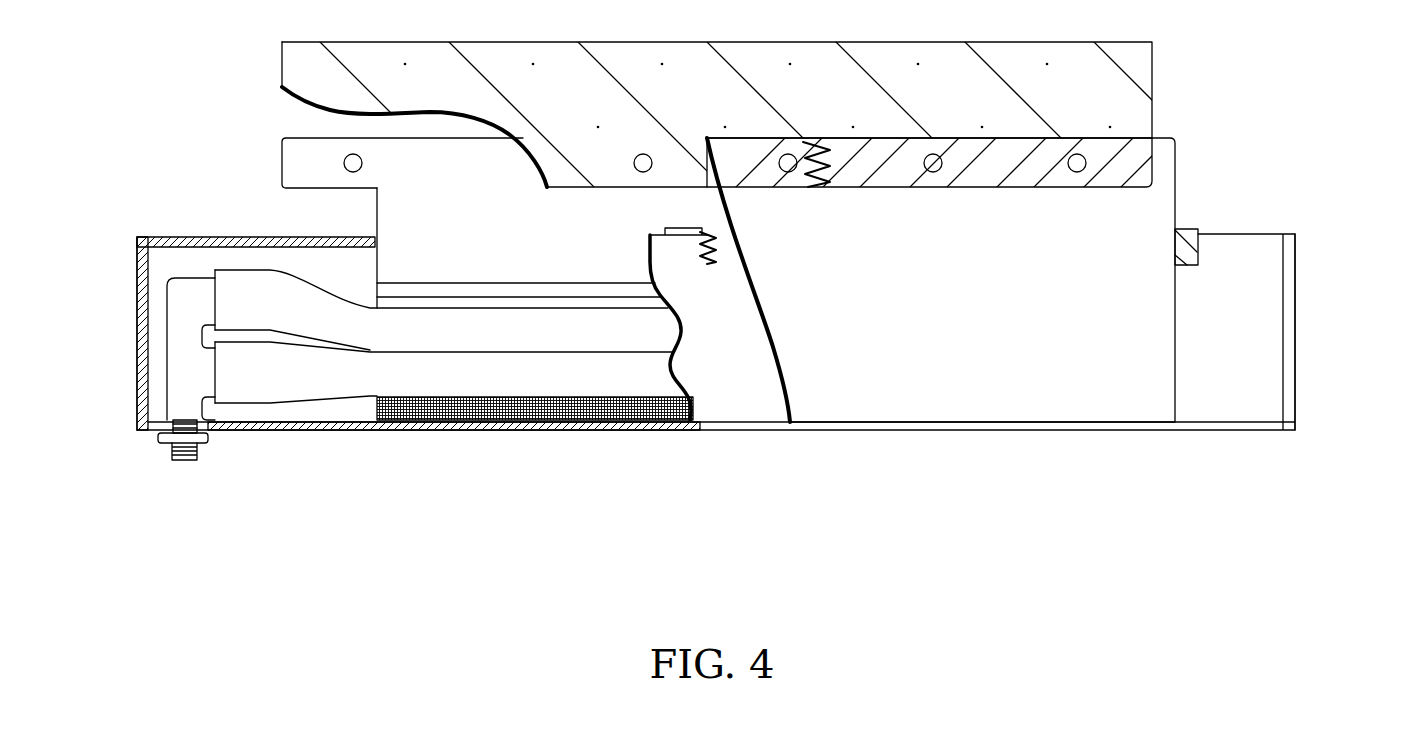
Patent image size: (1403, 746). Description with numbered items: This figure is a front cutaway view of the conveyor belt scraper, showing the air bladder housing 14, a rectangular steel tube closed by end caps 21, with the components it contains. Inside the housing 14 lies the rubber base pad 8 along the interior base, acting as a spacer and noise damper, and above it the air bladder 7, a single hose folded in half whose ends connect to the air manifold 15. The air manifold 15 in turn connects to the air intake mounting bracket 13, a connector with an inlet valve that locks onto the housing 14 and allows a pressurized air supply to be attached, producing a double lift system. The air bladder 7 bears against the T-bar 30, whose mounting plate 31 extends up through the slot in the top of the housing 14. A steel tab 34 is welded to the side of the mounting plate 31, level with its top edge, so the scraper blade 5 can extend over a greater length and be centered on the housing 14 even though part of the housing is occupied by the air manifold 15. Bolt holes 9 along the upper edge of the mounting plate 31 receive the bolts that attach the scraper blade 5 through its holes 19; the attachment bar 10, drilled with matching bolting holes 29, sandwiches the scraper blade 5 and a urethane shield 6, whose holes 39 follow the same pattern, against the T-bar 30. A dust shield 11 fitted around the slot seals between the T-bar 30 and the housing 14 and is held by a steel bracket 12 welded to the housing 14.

The scraper blade 5 is at (580, 122).
The urethane shield 6 is at (932, 380).
The air bladder 7 is at (263, 390).
The base pad 8 is at (445, 428).
The bolt holes 9 is at (373, 177).
The attachment bar 10 is at (1147, 144).
The dust shield 11 is at (656, 222).
The bracket 12 is at (1197, 212).
The air intake mounting bracket 13 is at (212, 458).
The air bladder housing 14 is at (175, 229).
The air manifold 15 is at (153, 296).
The holes 19 is at (660, 147).
The end caps 21 is at (124, 366).
The bolting holes 29 is at (947, 182).
The T-bar 30 is at (363, 215).
The mounting plate 31 is at (538, 261).
The steel tab 34 is at (271, 136).
The holes 39 is at (801, 185).